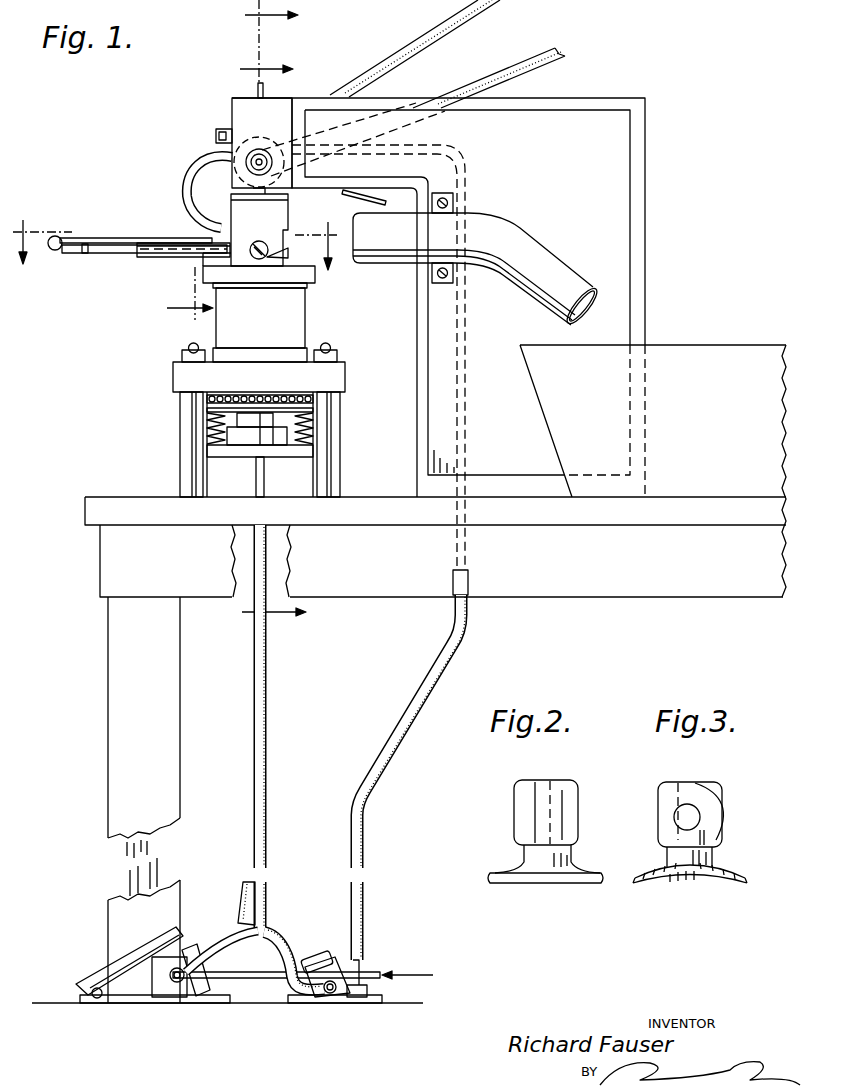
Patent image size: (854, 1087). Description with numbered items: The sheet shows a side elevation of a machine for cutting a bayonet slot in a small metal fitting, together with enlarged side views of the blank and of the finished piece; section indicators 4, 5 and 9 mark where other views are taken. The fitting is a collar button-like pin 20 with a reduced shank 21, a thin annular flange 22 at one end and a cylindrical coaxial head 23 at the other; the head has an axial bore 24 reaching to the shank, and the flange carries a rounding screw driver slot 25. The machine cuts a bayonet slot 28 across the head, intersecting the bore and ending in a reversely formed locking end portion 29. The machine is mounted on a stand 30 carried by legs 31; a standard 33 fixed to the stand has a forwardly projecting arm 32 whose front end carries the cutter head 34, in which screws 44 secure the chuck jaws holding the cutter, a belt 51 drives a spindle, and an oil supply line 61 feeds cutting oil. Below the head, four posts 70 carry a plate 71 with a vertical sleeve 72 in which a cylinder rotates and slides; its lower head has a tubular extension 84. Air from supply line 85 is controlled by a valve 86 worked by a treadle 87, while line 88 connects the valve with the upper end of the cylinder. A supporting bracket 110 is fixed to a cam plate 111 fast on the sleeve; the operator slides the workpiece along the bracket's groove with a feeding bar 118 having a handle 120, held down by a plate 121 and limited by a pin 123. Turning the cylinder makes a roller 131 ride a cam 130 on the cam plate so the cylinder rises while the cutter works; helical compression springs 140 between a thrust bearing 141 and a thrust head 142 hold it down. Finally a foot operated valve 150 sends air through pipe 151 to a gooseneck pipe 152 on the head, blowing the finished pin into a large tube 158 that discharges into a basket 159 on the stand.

In FIG. 1, the section line 4- 4 is at (273, 322).
In FIG. 1, the section line 5- 5 is at (175, 232).
In FIG. 1, the section line 9- 9 is at (190, 300).
In FIG. 2, the collar button-like pin 20 is at (542, 839).
In FIG. 3, the collar button-like pin 20 is at (687, 840).
In FIG. 2, the reduced shank 21 is at (530, 855).
In FIG. 3, the reduced shank 21 is at (713, 858).
In FIG. 2, the annular flange 22 is at (496, 883).
In FIG. 2, the cylindrical coaxial head 23 is at (522, 785).
In FIG. 3, the cylindrical coaxial head 23 is at (672, 800).
In FIG. 2, the axial bore 24 is at (525, 815).
In FIG. 3, the axial bore 24 is at (670, 838).
In FIG. 3, the screw driver slot 25 is at (683, 880).
In FIG. 3, the bayonet slot 28 is at (722, 806).
In FIG. 3, the reversely formed locking end portion 29 is at (690, 818).
In FIG. 1, the stand 30 is at (716, 526).
In FIG. 1, the legs 31 is at (109, 729).
In FIG. 1, the forwardly projecting arm 32 is at (409, 99).
In FIG. 1, the standard 33 is at (646, 252).
In FIG. 1, the head 34 is at (232, 106).
In FIG. 1, the screw 44 is at (258, 156).
In FIG. 1, the belt 51 is at (489, 6).
In FIG. 1, the oil supply line 61 is at (266, 88).
In FIG. 1, the posts 70 is at (178, 478).
In FIG. 1, the plate 71 is at (175, 378).
In FIG. 1, the vertical sleeve 72 is at (260, 322).
In FIG. 1, the tubular extension 84 is at (250, 422).
In FIG. 1, the air pressure supply line 85 is at (268, 738).
In FIG. 1, the valve 86 is at (185, 990).
In FIG. 1, the treadle 87 is at (128, 958).
In FIG. 1, the line 88 is at (240, 903).
In FIG. 1, the supporting plate or bracket 110 is at (158, 258).
In FIG. 1, the cam plate 111 is at (306, 277).
In FIG. 1, the feeding bar 118 is at (100, 255).
In FIG. 1, the handle 120 is at (53, 251).
In FIG. 1, the plate 121 is at (163, 238).
In FIG. 1, the pin 123 is at (84, 255).
In FIG. 1, the cam 130 is at (278, 249).
In FIG. 1, the roller 131 is at (258, 262).
In FIG. 1, the helical compression springs 140 is at (311, 430).
In FIG. 1, the thrust bearing 141 is at (324, 400).
In FIG. 1, the thrust head 142 is at (241, 452).
In FIG. 1, the foot operated valve 150 is at (340, 996).
In FIG. 1, the air pressure pipe 151 is at (448, 660).
In FIG. 1, the gooseneck pipe 152 is at (184, 178).
In FIG. 1, the large tube 158 is at (506, 244).
In FIG. 1, the basket 159 is at (713, 353).